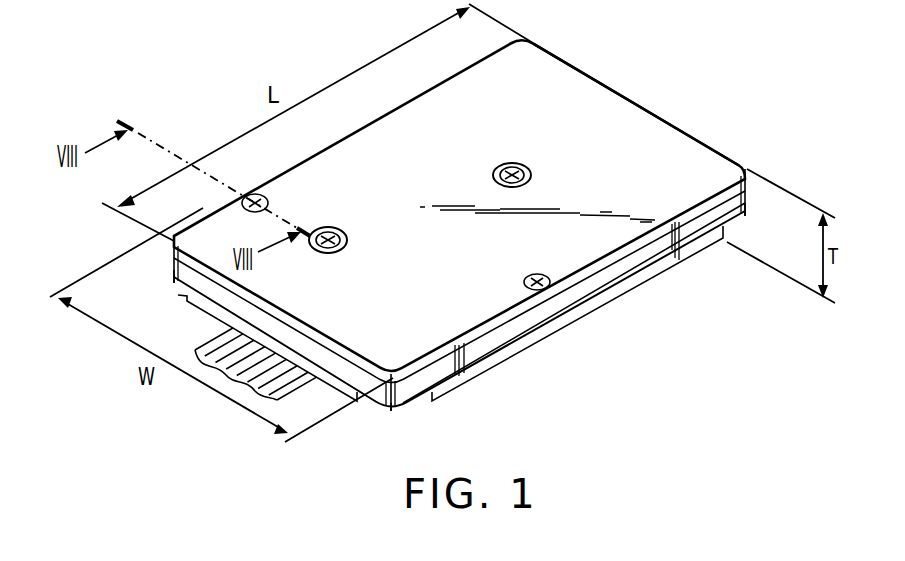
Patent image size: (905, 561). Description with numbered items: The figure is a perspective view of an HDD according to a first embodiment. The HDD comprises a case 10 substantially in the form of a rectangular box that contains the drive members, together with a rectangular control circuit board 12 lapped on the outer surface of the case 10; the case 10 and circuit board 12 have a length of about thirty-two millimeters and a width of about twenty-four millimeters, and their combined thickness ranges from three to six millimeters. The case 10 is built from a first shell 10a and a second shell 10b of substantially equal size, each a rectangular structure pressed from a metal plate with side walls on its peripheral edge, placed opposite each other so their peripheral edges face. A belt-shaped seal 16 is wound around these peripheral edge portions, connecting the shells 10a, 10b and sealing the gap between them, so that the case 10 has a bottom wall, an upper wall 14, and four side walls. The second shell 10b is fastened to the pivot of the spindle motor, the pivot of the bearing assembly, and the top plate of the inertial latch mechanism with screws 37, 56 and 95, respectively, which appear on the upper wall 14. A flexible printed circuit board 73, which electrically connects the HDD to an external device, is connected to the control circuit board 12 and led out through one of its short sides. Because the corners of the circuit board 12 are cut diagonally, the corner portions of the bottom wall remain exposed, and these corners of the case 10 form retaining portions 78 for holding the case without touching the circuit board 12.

The case 10 is at (636, 72).
The first shell 10a is at (700, 242).
The second shell 10b is at (667, 128).
The control circuit board 12 is at (568, 330).
The upper wall 14 is at (535, 58).
The seal 16 is at (627, 268).
The screw 37 is at (525, 167).
The screw 56 is at (331, 230).
The flexible printed circuit board 73 is at (202, 350).
The retaining portions 78 is at (173, 282).
The screw 95 is at (258, 195).